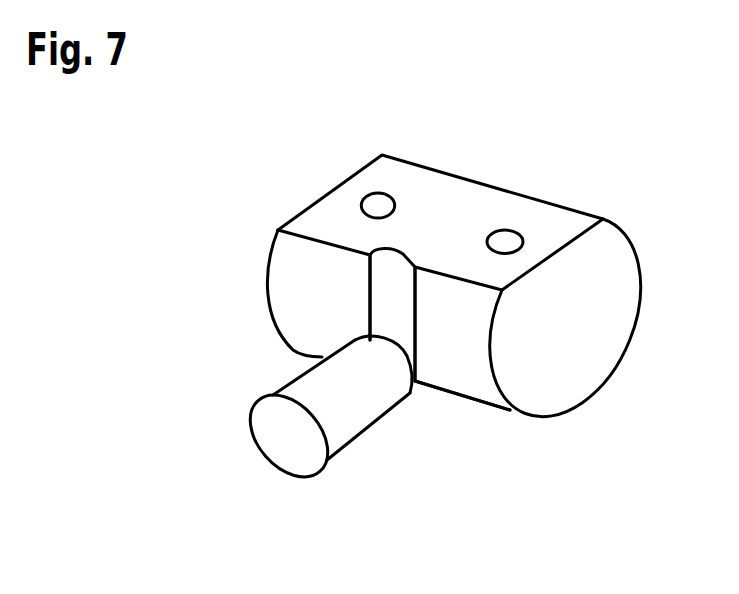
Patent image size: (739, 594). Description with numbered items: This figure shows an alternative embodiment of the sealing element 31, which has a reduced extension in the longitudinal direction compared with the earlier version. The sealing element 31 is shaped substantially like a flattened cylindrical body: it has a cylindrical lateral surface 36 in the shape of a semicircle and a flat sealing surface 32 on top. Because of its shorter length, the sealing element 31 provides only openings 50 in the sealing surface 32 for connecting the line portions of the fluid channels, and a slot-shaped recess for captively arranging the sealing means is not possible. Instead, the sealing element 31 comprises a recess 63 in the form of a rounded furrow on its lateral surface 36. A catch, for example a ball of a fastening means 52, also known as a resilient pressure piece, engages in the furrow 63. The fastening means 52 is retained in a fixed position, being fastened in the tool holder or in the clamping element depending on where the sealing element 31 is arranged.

The sealing element 31 is at (600, 327).
The sealing surface 32 is at (332, 204).
The cylindrical lateral surface 36 is at (432, 337).
The openings 50 is at (377, 203).
The fastening means 52 is at (283, 447).
The recess 63 is at (390, 302).